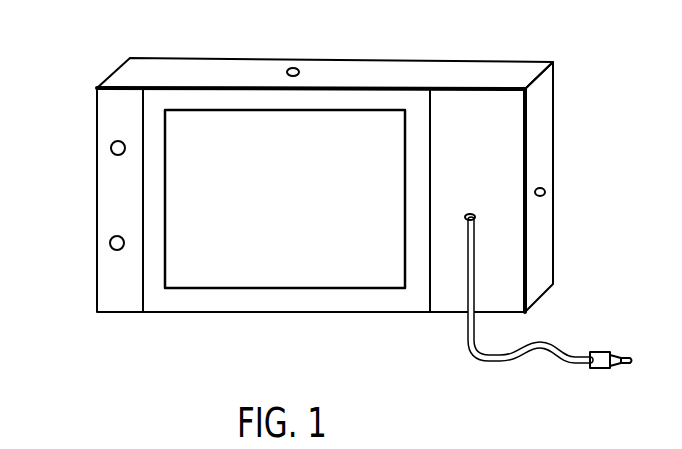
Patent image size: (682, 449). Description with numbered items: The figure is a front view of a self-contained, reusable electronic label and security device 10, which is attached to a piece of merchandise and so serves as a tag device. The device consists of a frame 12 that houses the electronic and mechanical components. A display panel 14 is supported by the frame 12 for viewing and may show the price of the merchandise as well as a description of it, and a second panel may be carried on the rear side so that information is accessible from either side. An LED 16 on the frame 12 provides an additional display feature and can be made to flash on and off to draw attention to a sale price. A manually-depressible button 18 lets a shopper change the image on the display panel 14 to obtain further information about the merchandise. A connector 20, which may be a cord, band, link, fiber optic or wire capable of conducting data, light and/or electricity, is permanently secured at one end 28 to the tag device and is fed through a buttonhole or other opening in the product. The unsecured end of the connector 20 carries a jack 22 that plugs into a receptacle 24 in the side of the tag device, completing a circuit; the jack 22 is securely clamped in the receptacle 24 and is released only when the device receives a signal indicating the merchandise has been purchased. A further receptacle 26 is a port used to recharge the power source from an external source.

The label and security device 10 is at (498, 68).
The frame 12 is at (189, 304).
The display panel 14 is at (328, 275).
The LED 16 is at (110, 242).
The manually-depressible button 18 is at (111, 149).
The connector 20 is at (465, 336).
The jack 22 is at (602, 352).
The receptacle 24 is at (546, 188).
The receptacle 26 is at (297, 68).
The end 28 is at (471, 212).